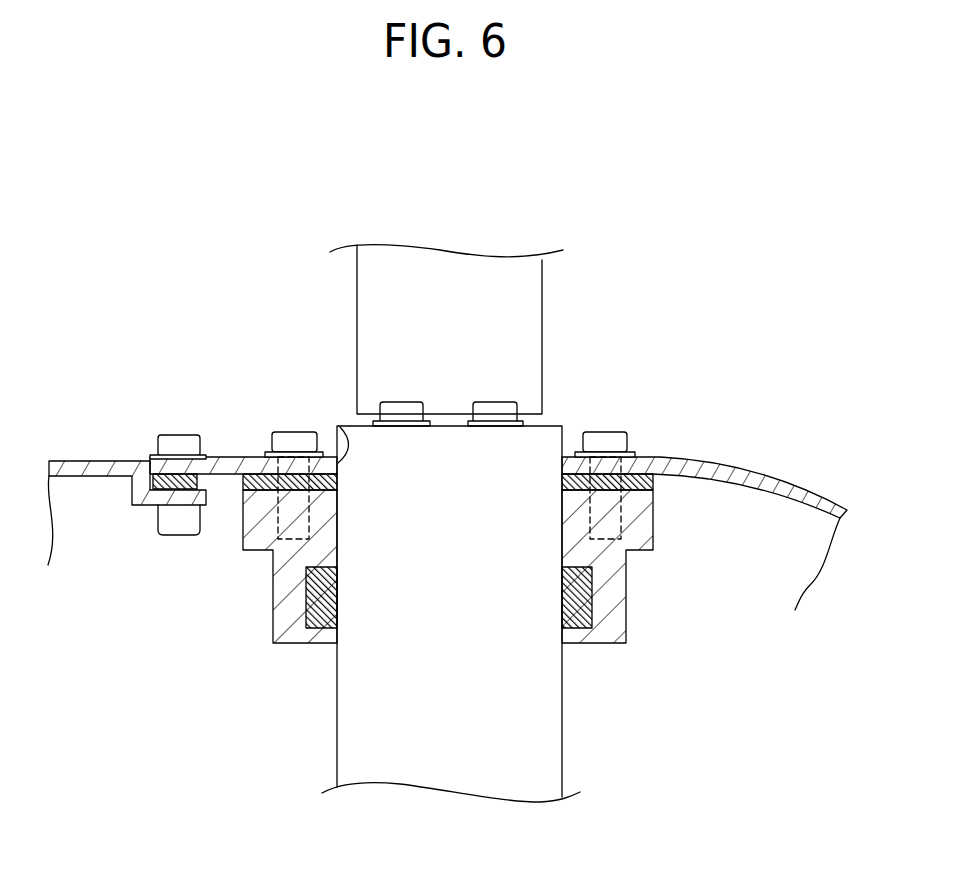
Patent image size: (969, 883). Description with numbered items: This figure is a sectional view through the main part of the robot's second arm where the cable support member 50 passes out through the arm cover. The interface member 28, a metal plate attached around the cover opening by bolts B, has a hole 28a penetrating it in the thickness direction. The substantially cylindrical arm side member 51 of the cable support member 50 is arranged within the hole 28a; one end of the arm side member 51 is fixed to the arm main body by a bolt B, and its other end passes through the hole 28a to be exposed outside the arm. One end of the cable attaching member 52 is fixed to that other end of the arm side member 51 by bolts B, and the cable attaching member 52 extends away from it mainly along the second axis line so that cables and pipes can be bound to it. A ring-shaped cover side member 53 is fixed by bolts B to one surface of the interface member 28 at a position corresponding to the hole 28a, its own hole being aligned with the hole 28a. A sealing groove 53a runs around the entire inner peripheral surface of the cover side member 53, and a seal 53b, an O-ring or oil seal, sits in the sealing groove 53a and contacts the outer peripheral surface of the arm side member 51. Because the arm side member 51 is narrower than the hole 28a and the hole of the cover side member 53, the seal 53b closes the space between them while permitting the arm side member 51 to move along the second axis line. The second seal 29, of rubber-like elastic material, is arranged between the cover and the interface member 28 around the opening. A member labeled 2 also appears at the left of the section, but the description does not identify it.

The frame 2 is at (207, 500).
The interface member 28 is at (728, 465).
The hole 28a is at (343, 428).
The second seal 29 is at (218, 463).
The cable support member 50 is at (483, 523).
The arm side member 51 is at (562, 764).
The cable attaching member 52 is at (543, 310).
The cover side member 53 is at (500, 588).
The sealing groove 53a is at (585, 620).
The seal 53b is at (319, 605).
The bolt B is at (175, 435).